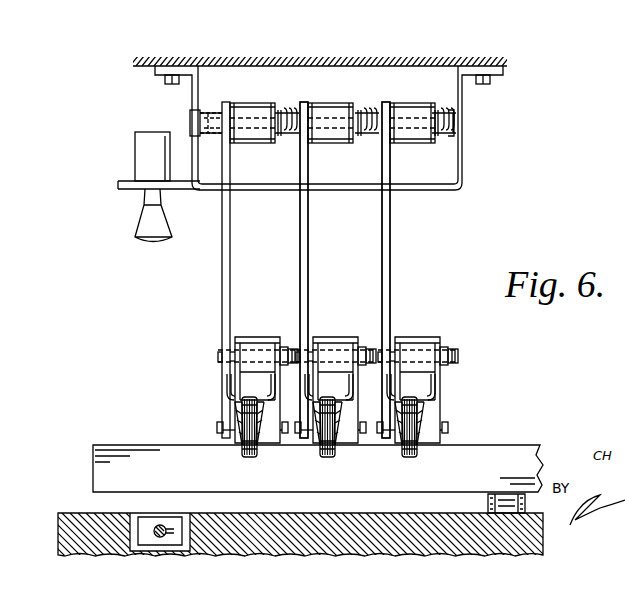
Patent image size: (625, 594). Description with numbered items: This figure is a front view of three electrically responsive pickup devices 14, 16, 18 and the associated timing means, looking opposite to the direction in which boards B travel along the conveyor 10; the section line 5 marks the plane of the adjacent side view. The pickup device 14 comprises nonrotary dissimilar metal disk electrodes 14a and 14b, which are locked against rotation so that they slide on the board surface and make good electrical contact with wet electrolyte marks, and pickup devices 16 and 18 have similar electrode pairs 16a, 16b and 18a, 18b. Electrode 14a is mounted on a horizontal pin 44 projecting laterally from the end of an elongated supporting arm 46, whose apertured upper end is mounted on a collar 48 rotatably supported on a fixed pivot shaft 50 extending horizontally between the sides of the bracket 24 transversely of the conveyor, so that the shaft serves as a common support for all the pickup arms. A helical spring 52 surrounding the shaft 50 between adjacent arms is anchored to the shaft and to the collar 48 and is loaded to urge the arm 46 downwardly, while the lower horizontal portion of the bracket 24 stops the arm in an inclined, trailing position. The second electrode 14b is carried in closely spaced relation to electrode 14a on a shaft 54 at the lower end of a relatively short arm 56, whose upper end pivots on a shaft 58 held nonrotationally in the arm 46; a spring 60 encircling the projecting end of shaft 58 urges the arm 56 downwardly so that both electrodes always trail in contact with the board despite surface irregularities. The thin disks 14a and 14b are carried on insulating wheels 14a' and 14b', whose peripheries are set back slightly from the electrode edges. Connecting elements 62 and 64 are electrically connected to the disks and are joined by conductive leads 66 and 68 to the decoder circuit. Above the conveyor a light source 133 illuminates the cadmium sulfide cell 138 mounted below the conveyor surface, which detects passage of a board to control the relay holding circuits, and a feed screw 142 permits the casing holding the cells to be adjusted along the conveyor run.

The section line 5 is at (283, 36).
The conveyor 10 is at (77, 513).
The pickup device 14 is at (265, 492).
The pickup device 16 is at (343, 492).
The pickup device 18 is at (393, 457).
The disk electrode 14a is at (227, 500).
The disk electrode 14b is at (270, 500).
The disk electrode 16a is at (320, 500).
The disk electrode 16b is at (355, 500).
The disk electrode 18a is at (397, 500).
The disk electrode 18b is at (438, 500).
The insulating wheel 14a' is at (219, 457).
The insulating wheel 14b' is at (279, 455).
The bracket 24 is at (462, 160).
The horizontal pin 44 is at (217, 428).
The supporting arm 46 is at (222, 307).
The collar 48 is at (259, 104).
The pivot shaft 50 is at (191, 122).
The helical spring 52 is at (289, 108).
The shaft 54 is at (285, 444).
The short arm 56 is at (260, 340).
The shaft 58 is at (217, 354).
The spring 60 is at (288, 348).
The connecting element 62 is at (236, 412).
The connecting element 64 is at (268, 416).
The conductive lead 66 is at (228, 380).
The conductive lead 68 is at (276, 378).
The light source 133 is at (142, 239).
The cadmium sulfide cell 138 is at (160, 516).
The feed screw 142 is at (166, 526).
The board B is at (489, 474).